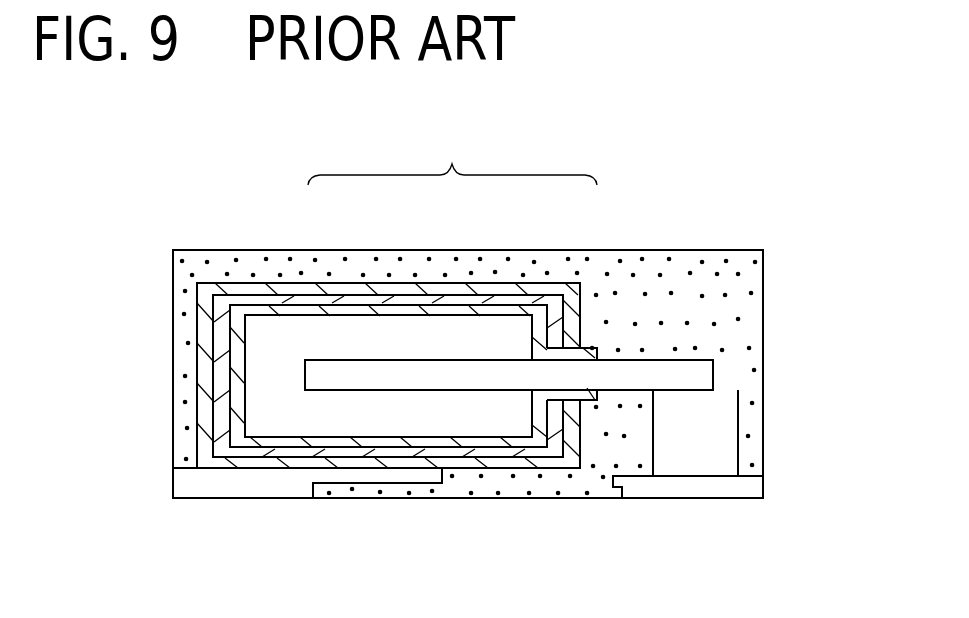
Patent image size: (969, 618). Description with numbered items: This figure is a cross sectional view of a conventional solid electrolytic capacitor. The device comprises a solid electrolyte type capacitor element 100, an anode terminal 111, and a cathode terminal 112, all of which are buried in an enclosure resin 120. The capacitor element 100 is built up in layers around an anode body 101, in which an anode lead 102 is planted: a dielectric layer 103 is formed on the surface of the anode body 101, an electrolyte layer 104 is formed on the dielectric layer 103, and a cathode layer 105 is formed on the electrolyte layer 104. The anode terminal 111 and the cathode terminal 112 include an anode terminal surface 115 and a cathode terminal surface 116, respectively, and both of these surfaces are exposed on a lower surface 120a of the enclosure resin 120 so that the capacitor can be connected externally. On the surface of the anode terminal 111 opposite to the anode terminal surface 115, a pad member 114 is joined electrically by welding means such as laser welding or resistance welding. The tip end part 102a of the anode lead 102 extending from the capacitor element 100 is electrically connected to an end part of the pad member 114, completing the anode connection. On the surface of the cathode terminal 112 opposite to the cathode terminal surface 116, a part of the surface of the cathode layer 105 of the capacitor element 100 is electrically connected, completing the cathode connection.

The solid electrolyte type capacitor element 100 is at (452, 154).
The anode body 101 is at (320, 340).
The anode lead 102 is at (350, 377).
The tip end part 102a is at (667, 350).
The dielectric layer 103 is at (397, 308).
The electrolyte layer 104 is at (447, 300).
The cathode layer 105 is at (475, 290).
The anode terminal 111 is at (720, 488).
The cathode terminal 112 is at (270, 484).
The pad member 114 is at (713, 432).
The anode terminal surface 115 is at (655, 500).
The cathode terminal surface 116 is at (202, 500).
The enclosure resin 120 is at (243, 263).
The lower surface 120a is at (465, 500).